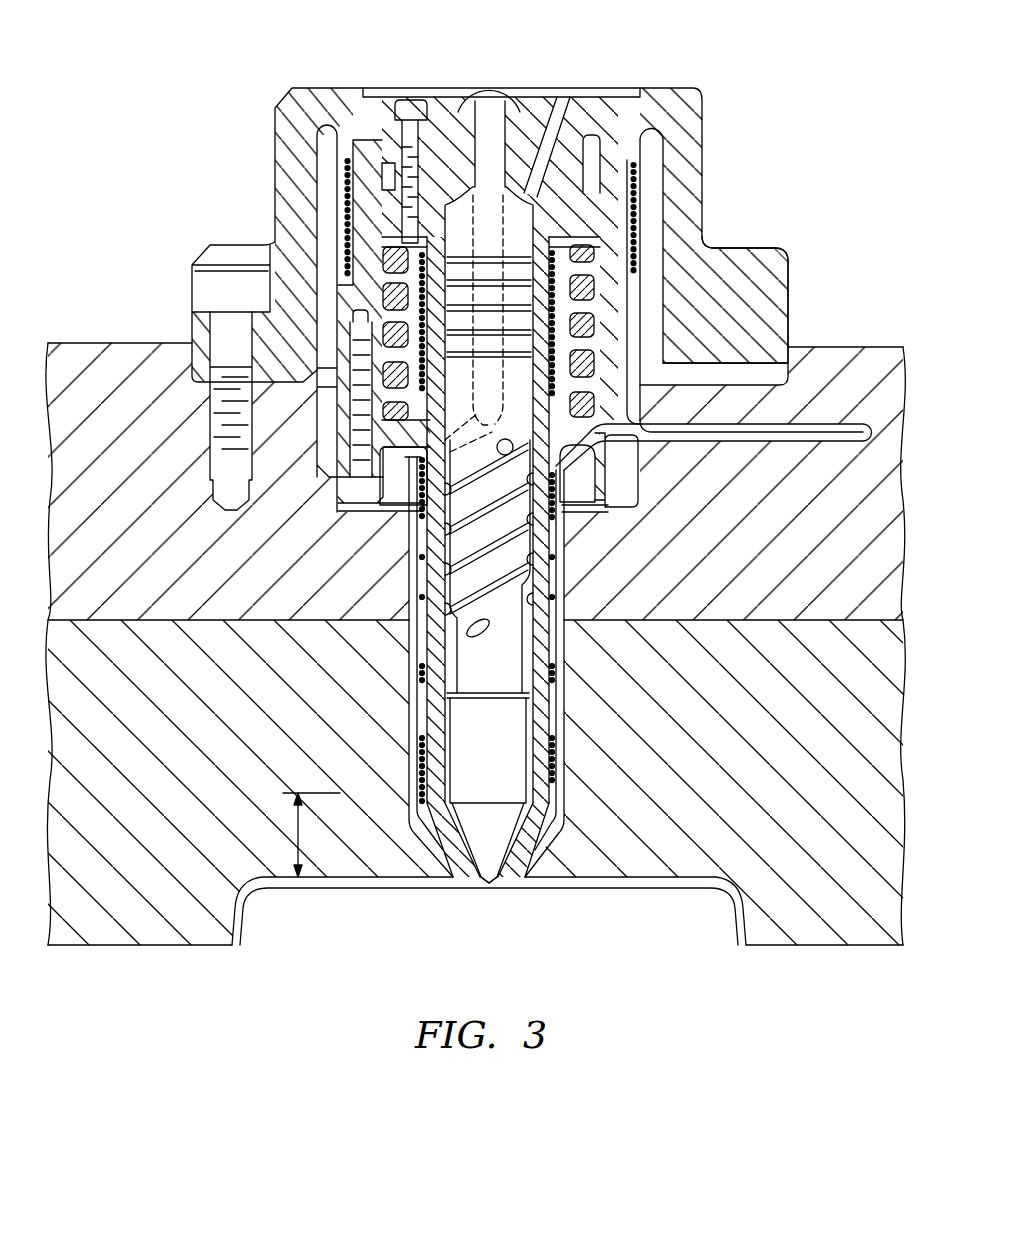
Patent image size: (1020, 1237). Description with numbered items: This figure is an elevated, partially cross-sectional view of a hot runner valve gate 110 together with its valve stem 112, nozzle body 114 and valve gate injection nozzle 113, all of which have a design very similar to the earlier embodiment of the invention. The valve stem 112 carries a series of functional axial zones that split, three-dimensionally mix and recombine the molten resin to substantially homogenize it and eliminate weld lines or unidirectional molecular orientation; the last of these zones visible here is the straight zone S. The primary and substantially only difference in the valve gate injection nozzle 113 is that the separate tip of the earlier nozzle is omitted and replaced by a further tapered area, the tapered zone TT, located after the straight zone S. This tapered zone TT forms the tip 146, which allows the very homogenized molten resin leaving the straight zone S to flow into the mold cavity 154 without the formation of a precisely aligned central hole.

The hot runner valve gate 110 is at (797, 200).
The valve stem 112 is at (477, 668).
The valve gate injection nozzle 113 is at (714, 333).
The nozzle body 114 is at (552, 770).
The tip 146 is at (479, 880).
The mold cavity 154 is at (243, 922).
The straight zone S is at (540, 727).
The tapered zone TT is at (311, 835).